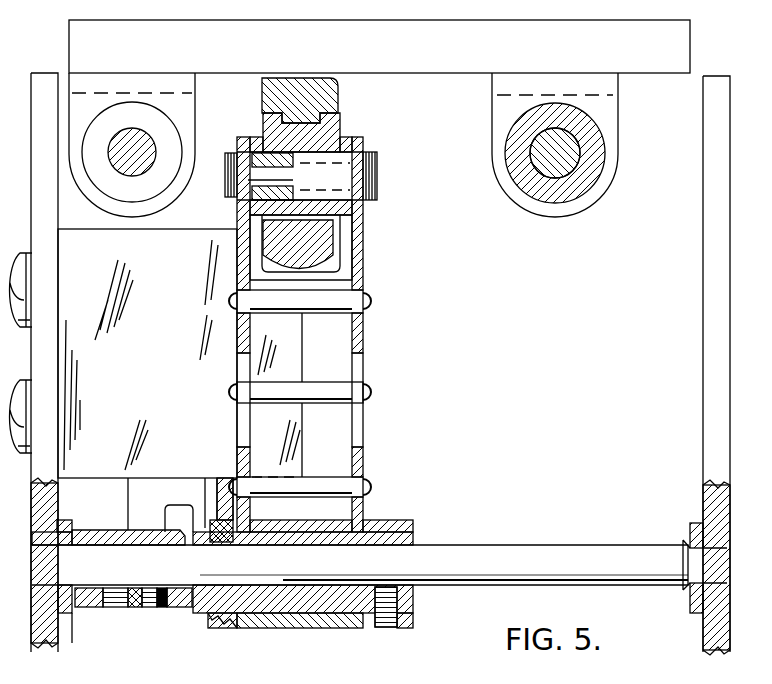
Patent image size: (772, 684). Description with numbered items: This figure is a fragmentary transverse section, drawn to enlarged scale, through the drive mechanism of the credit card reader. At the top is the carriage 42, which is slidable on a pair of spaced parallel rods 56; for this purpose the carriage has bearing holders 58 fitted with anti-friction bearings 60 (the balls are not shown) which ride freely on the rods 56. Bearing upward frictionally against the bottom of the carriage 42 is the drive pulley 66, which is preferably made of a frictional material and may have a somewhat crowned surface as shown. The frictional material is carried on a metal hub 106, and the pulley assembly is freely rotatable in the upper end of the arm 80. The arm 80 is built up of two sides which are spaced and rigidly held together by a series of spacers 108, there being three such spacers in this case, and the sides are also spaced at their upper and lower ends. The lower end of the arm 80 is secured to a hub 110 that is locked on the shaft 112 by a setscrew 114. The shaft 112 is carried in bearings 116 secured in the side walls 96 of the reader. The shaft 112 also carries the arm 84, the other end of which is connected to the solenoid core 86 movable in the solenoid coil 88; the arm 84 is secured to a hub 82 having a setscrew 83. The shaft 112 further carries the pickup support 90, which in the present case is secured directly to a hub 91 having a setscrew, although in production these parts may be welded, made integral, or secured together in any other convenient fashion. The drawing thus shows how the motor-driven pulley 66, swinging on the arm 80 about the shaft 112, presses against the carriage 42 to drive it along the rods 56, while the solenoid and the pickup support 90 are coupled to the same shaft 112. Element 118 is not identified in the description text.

The carriage 42 is at (457, 59).
The spaced parallel rods 56 is at (147, 147).
The bearing holders 58 is at (195, 145).
The anti-friction bearings 60 is at (160, 178).
The drive pulley 66 is at (318, 80).
The arm 80 is at (365, 238).
The hub 82 is at (150, 530).
The setscrew 83 is at (152, 605).
The arm 84 is at (168, 605).
The solenoid core 86 is at (135, 512).
The solenoid coil 88 is at (145, 392).
The pickup support 90 is at (83, 530).
The hub 91 is at (98, 600).
The side walls 96 is at (32, 640).
The metal hub 106 is at (340, 125).
The spacers 108 is at (308, 388).
The hub 110 is at (395, 520).
The shaft 112 is at (487, 547).
The setscrew 114 is at (390, 627).
The bearings 116 is at (72, 615).
The bearing housing 118 is at (212, 615).